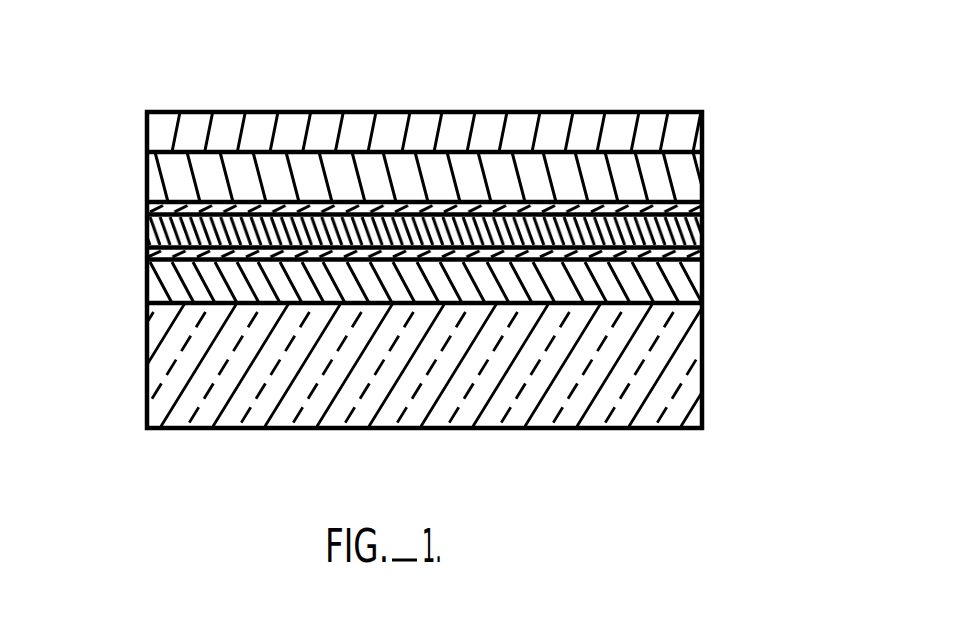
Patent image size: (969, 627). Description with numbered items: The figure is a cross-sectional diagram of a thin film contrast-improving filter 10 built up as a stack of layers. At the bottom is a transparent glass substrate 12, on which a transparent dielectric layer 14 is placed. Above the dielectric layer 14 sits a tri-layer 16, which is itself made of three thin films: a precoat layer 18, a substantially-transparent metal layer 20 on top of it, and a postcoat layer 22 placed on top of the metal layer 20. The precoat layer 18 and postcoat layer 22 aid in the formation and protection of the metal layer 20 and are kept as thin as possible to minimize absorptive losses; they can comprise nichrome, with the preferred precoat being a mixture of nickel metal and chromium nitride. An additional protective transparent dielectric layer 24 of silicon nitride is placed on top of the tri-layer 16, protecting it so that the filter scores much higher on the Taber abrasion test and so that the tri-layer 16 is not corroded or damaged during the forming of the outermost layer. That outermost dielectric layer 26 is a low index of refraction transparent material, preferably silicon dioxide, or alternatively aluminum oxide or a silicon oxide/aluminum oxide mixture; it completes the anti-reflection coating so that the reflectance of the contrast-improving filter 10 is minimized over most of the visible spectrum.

The contrast-improving filter 10 is at (689, 52).
The transparent glass substrate 12 is at (172, 382).
The transparent dielectric layer 14 is at (156, 283).
The tri-layer 16 is at (131, 200).
The precoat layer 18 is at (702, 250).
The substantially-transparent metal layer 20 is at (702, 230).
The postcoat layer 22 is at (702, 205).
The protective transparent dielectric layer 24 is at (157, 178).
The dielectric layer 26 is at (158, 137).